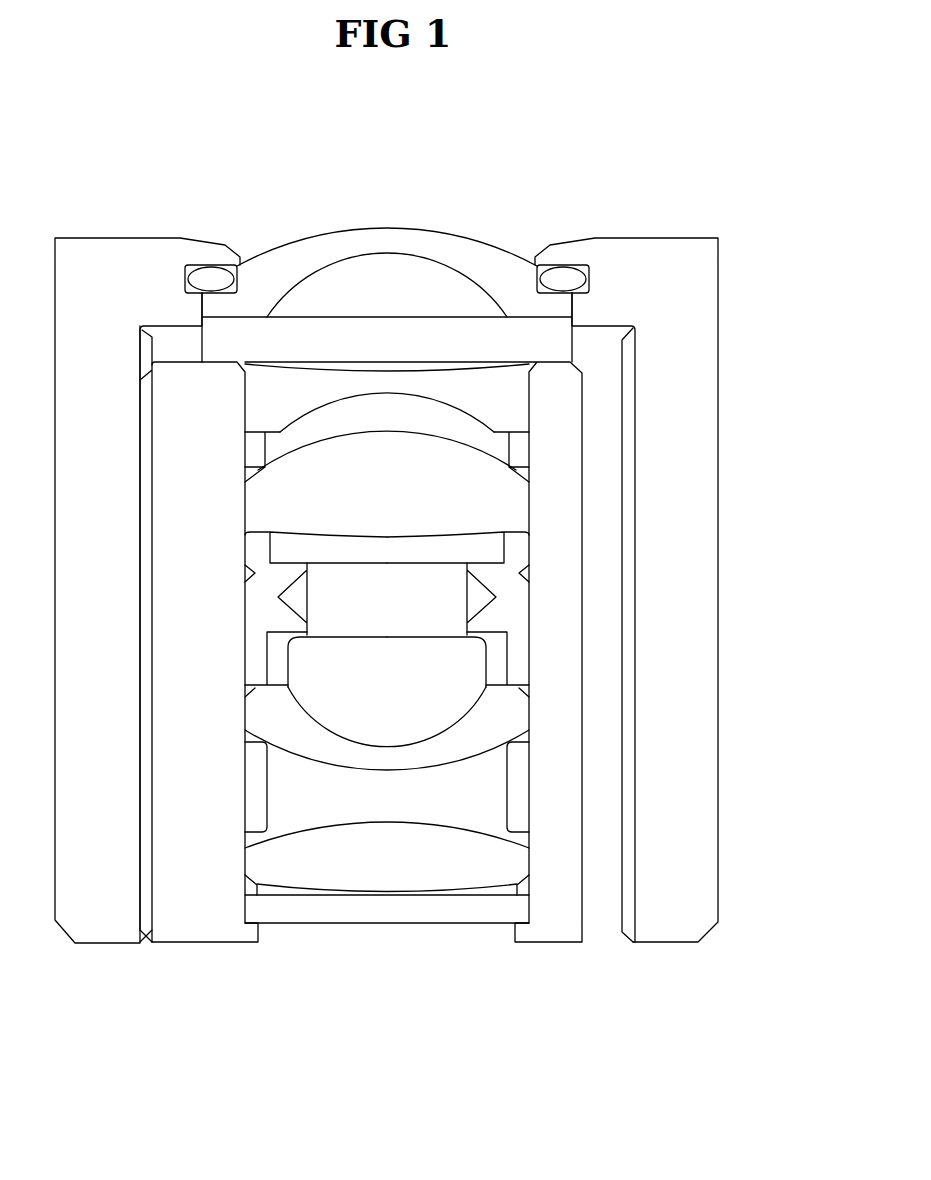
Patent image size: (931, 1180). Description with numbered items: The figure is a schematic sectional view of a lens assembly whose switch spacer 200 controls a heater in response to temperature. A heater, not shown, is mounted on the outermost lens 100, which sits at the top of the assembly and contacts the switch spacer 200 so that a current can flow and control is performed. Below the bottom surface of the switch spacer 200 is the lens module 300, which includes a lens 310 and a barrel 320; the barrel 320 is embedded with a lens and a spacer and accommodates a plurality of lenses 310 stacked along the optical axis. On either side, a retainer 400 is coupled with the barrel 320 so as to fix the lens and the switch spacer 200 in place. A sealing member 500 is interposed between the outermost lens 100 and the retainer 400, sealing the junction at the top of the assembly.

The outermost lens 100 is at (362, 224).
The switch spacer 200 is at (458, 338).
The lens module 300 is at (582, 633).
The lens 310 is at (377, 865).
The barrel 320 is at (550, 917).
The retainer 400 is at (690, 467).
The sealing member 500 is at (212, 277).